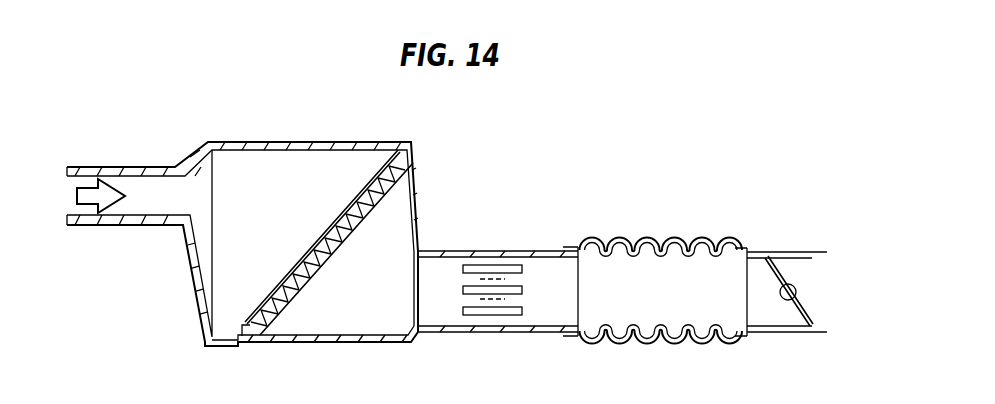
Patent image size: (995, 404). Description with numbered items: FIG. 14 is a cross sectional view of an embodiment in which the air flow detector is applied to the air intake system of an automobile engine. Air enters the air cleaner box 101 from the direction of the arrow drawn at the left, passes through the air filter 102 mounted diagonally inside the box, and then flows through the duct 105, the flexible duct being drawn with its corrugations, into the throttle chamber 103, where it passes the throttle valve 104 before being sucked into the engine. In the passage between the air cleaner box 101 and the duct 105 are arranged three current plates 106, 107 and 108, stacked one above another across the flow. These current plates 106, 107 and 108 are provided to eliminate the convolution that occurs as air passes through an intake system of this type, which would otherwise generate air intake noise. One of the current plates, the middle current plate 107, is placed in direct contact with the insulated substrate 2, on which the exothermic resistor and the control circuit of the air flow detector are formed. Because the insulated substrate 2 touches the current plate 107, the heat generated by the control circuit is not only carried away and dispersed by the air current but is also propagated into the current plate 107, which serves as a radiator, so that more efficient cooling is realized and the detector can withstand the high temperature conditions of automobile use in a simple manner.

The air cleaner box 101 is at (298, 142).
The air filter 102 is at (300, 300).
The throttle chamber 103 is at (785, 256).
The throttle valve 104 is at (795, 326).
The duct 105 is at (690, 240).
The current plate 106 is at (472, 265).
The current plate 107 is at (463, 290).
The current plate 108 is at (507, 314).
The insulated substrate 2 is at (505, 280).